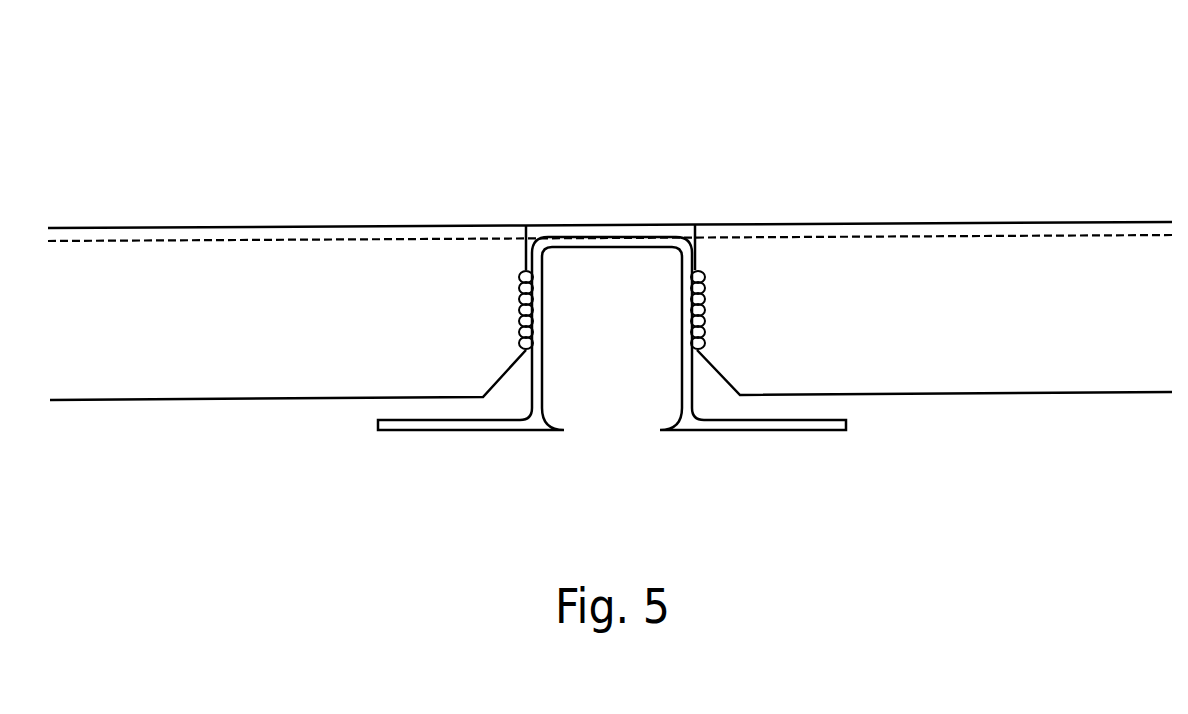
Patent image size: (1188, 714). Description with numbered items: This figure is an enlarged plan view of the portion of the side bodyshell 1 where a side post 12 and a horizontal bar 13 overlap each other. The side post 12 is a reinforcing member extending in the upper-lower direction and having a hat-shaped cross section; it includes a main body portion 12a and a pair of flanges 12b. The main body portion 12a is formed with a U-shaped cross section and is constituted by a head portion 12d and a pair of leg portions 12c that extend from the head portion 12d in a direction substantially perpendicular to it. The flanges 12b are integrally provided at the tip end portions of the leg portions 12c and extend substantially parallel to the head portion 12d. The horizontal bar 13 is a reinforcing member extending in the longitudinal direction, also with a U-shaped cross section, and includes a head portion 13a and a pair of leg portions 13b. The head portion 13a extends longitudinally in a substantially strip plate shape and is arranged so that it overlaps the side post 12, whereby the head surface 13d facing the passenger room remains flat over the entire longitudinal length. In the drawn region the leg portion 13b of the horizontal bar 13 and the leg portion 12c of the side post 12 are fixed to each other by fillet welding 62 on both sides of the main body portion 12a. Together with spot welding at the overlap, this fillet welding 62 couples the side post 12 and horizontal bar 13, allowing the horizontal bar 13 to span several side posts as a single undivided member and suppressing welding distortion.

The side bodyshell 1 is at (985, 88).
The side post 12 is at (448, 426).
The main body portion 12a is at (603, 246).
The flange 12b is at (400, 420).
The leg portion 12c is at (537, 308).
The head portion 12d is at (650, 243).
The horizontal bar 13 is at (978, 243).
The head portion 13a is at (615, 230).
The leg portion 13b is at (195, 392).
The head surface 13d is at (550, 224).
The fillet welding 62 is at (520, 282).